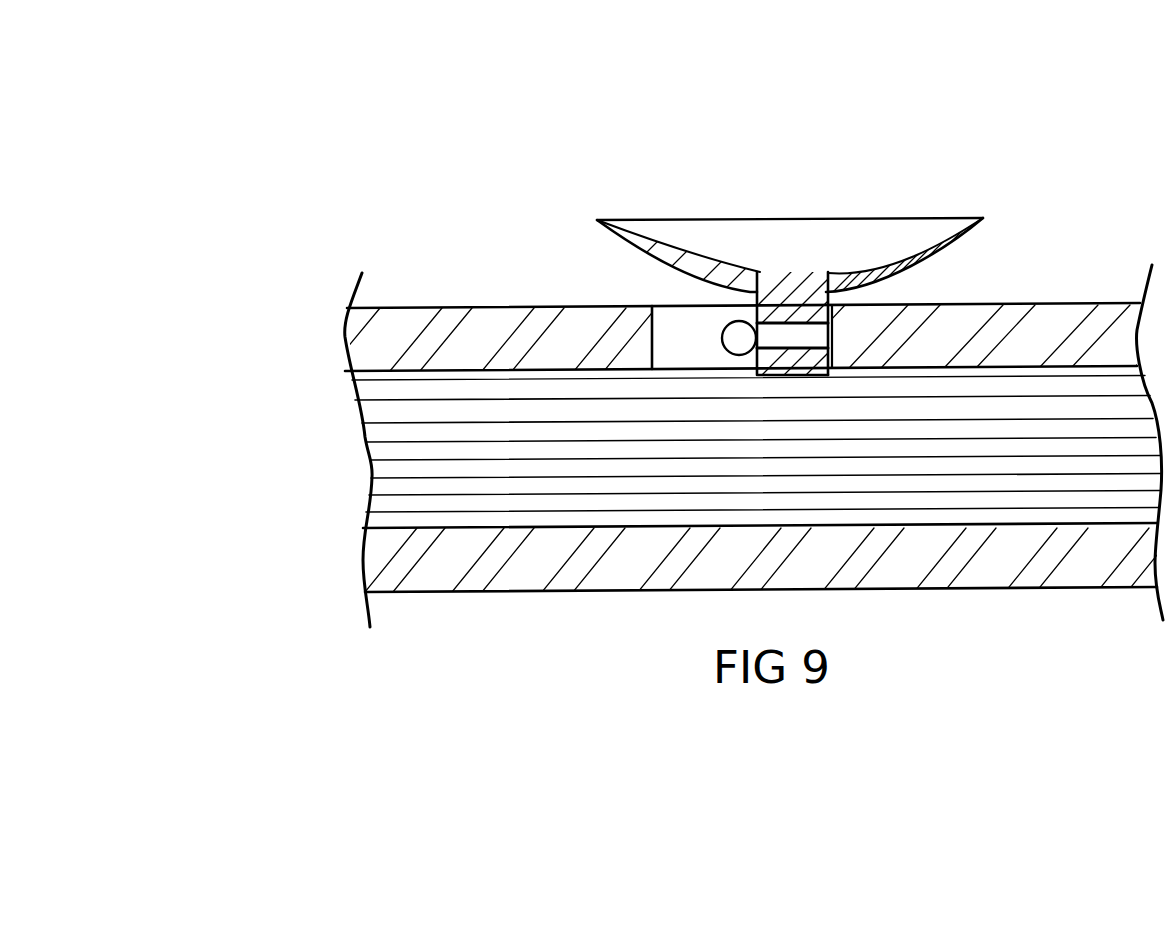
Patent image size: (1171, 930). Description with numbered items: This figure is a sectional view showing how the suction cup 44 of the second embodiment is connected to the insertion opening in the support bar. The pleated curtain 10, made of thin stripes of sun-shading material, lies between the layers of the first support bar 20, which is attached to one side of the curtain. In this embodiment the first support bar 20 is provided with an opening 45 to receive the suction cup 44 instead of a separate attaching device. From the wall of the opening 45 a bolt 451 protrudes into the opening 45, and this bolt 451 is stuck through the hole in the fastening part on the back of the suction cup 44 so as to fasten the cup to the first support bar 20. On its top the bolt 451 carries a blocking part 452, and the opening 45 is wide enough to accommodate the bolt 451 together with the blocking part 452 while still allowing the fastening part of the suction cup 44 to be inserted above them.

The pleated curtain 10 is at (413, 445).
The first support bar 20 is at (1050, 323).
The suction cup 44 is at (703, 240).
The opening 45 is at (677, 328).
The bolt 451 is at (807, 337).
The blocking part 452 is at (733, 335).